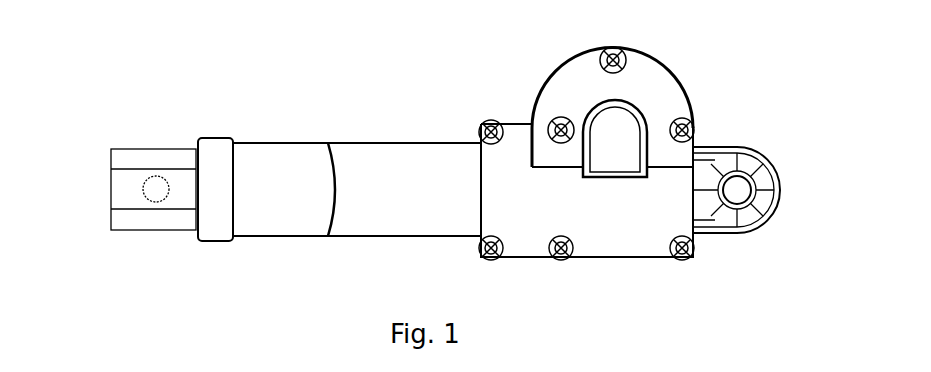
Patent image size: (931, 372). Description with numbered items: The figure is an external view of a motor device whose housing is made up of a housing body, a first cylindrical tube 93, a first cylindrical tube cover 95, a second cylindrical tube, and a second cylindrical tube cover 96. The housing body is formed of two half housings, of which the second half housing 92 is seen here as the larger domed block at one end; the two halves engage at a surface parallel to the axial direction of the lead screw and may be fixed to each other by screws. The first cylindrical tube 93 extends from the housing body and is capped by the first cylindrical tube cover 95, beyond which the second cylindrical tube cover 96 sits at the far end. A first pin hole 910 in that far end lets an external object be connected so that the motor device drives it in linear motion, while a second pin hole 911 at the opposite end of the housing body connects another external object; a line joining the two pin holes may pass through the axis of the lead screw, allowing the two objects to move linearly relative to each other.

The second half housing 92 is at (605, 139).
The first cylindrical tube 93 is at (357, 167).
The first cylindrical tube cover 95 is at (248, 170).
The second cylindrical tube cover 96 is at (162, 164).
The first pin hole 910 is at (109, 227).
The second pin hole 911 is at (762, 183).